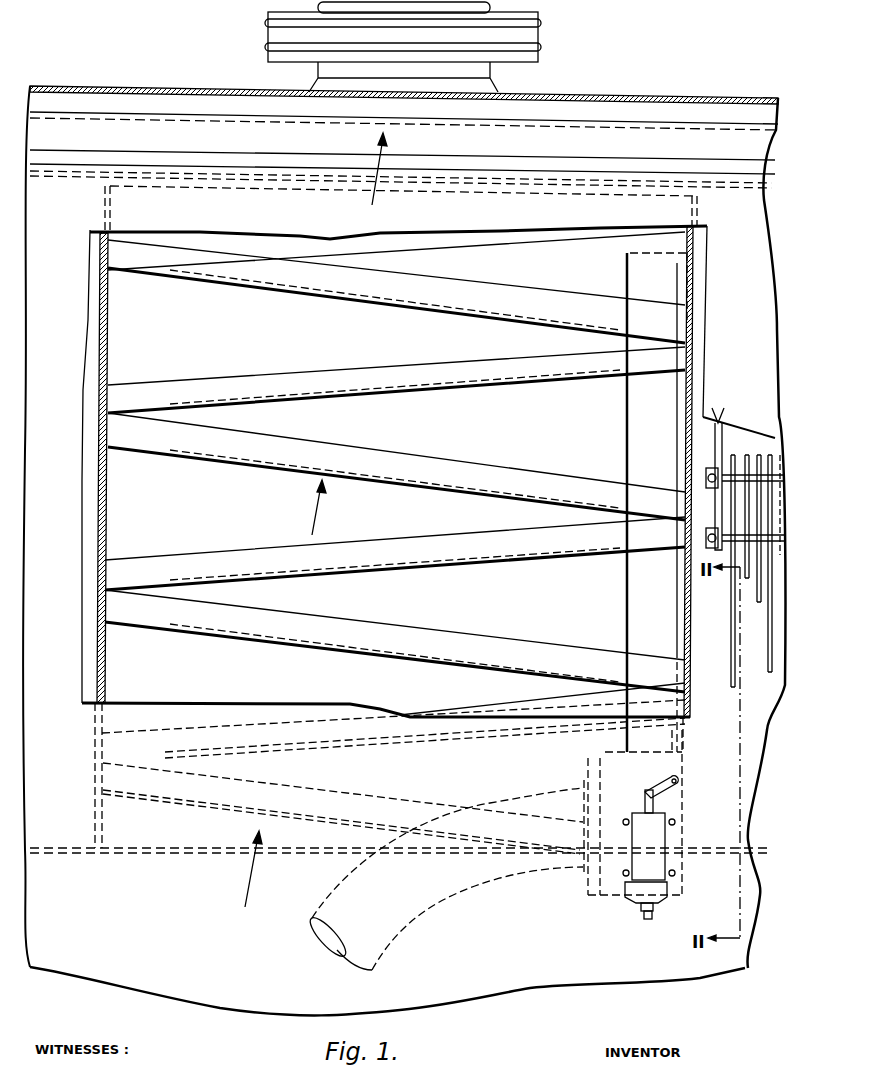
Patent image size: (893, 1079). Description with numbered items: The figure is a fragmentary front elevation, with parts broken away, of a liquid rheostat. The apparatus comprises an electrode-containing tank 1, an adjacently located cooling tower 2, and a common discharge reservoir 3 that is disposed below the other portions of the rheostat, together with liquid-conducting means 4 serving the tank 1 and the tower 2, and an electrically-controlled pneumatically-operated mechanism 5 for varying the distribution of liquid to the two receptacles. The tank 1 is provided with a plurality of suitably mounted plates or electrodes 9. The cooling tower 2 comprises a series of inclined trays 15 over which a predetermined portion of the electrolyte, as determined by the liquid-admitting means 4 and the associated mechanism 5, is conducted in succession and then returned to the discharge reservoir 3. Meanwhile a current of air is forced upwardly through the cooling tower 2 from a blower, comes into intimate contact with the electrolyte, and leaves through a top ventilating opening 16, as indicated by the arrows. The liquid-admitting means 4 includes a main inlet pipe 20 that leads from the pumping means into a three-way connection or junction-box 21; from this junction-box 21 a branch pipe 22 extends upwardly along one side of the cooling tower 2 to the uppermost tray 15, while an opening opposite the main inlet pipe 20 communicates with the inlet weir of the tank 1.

The electrode-containing tank 1 is at (700, 455).
The cooling tower 2 is at (148, 493).
The common discharge reservoir 3 is at (505, 958).
The liquid-conducting means 4 is at (582, 790).
The electrically-controlled pneumatically-operated mechanism 5 is at (632, 885).
The electrodes 9 is at (767, 633).
The inclined trays 15 is at (508, 363).
The top ventilating opening 16 is at (527, 41).
The main inlet pipe 20 is at (460, 897).
The three-way connection or junction-box 21 is at (618, 763).
The branch pipe 22 is at (635, 607).